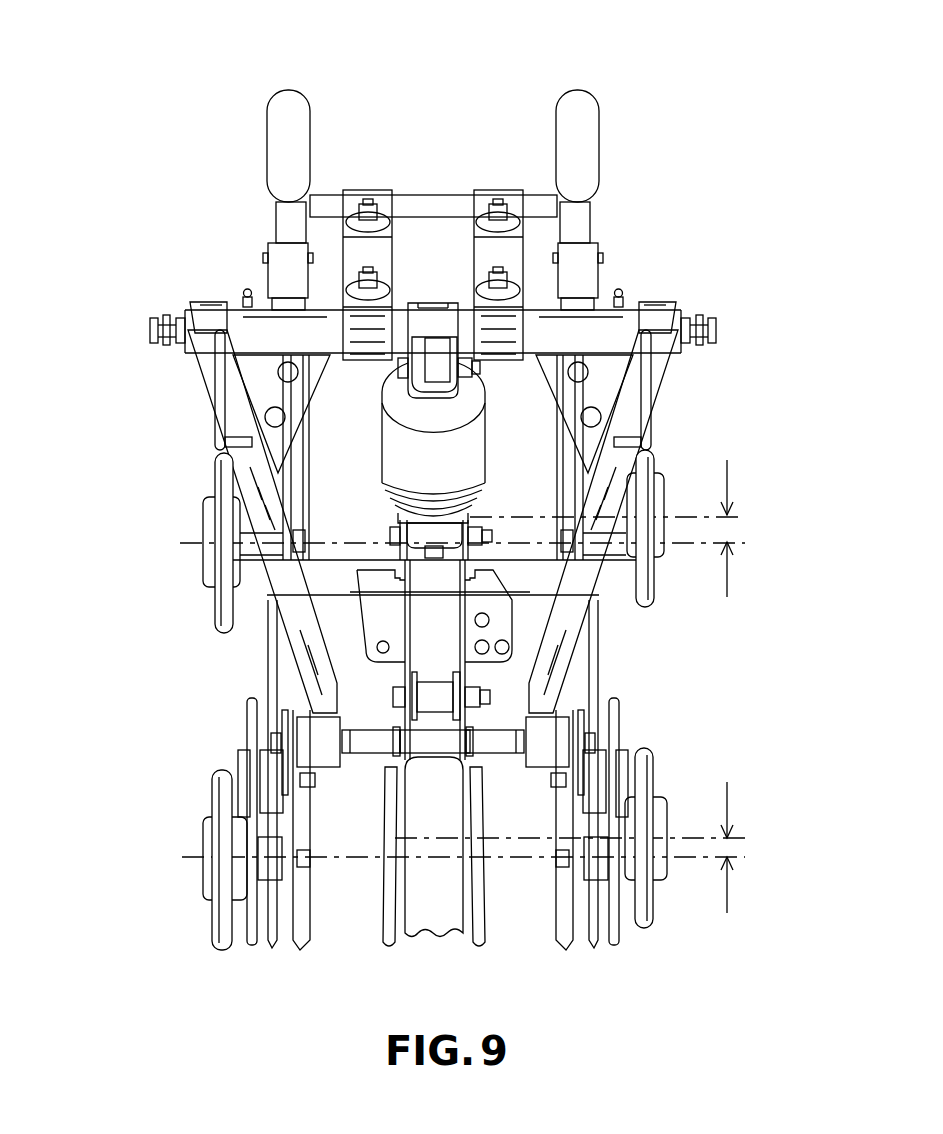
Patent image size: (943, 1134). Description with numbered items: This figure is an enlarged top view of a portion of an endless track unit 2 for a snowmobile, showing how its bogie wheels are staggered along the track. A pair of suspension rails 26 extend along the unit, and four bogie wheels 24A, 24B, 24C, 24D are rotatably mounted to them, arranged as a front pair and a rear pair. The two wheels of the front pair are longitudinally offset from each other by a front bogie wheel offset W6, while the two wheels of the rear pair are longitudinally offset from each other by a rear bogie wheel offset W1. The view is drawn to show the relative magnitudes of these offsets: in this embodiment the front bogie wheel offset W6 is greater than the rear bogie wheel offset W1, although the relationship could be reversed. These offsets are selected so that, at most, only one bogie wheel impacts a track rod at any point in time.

The endless track unit 2 is at (707, 114).
The suspension rails 26 is at (557, 152).
The bogie wheel 24A is at (650, 612).
The bogie wheel 24B is at (215, 607).
The bogie wheel 24C is at (648, 930).
The bogie wheel 24D is at (213, 930).
The front bogie wheel offset W6 is at (727, 480).
The rear bogie wheel offset W1 is at (727, 800).